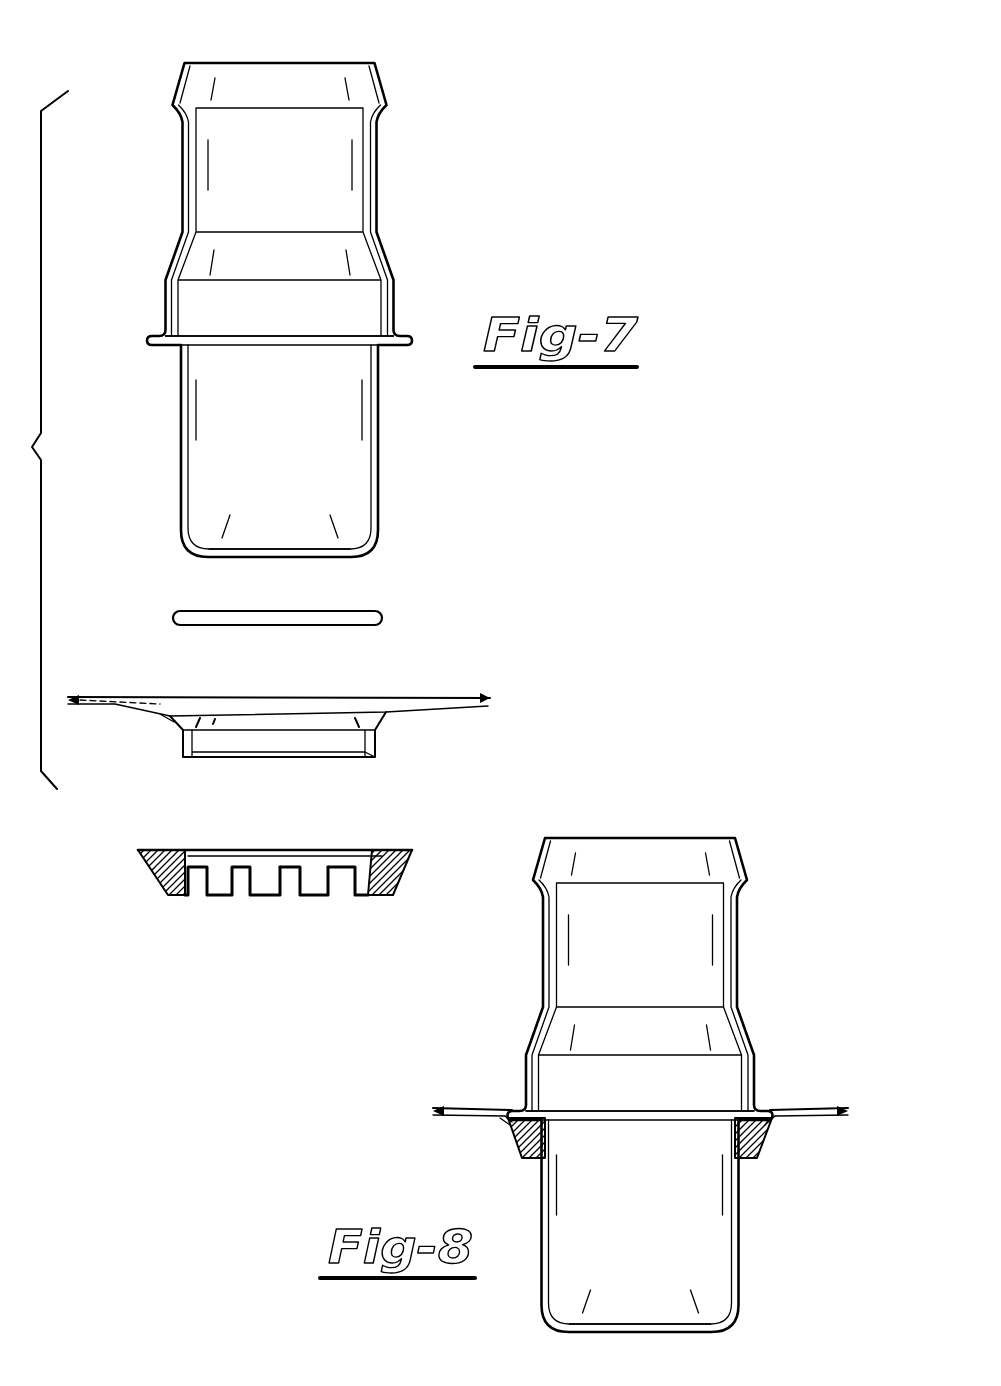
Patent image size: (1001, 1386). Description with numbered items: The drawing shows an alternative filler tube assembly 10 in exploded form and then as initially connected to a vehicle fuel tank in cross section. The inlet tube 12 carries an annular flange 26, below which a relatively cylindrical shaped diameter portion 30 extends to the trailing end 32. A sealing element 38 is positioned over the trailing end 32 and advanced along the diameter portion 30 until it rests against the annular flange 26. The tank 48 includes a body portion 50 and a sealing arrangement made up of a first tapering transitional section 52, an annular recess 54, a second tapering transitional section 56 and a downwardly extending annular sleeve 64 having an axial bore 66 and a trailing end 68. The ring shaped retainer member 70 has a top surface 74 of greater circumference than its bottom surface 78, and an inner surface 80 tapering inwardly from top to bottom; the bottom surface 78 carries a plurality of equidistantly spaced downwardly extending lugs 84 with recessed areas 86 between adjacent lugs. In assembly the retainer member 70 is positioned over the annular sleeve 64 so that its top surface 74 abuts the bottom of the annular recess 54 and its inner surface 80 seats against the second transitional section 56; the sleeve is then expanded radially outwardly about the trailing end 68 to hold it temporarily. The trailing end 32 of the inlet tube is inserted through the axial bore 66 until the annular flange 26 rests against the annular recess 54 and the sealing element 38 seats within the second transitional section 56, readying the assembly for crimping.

In FIG. 7, the filler tube assembly 10 is at (34, 440).
In FIG. 7, the inlet tube 12 is at (418, 92).
In FIG. 8, the inlet tube 12 is at (772, 853).
In FIG. 7, the annular flange 26 is at (389, 346).
In FIG. 8, the annular flange 26 is at (512, 1107).
In FIG. 7, the diameter portion 30 is at (378, 456).
In FIG. 8, the diameter portion 30 is at (740, 1258).
In FIG. 7, the trailing end 32 is at (330, 558).
In FIG. 7, the sealing element 38 is at (375, 645).
In FIG. 7, the tank 48 is at (316, 721).
In FIG. 7, the body portion 50 is at (478, 712).
In FIG. 8, the body portion 50 is at (822, 1107).
In FIG. 7, the first tapering transitional section 52 is at (395, 708).
In FIG. 8, the first tapering transitional section 52 is at (787, 1121).
In FIG. 7, the annular recess 54 is at (383, 713).
In FIG. 8, the annular recess 54 is at (505, 1134).
In FIG. 7, the second tapering transitional section 56 is at (372, 719).
In FIG. 8, the second tapering transitional section 56 is at (513, 1148).
In FIG. 7, the annular sleeve 64 is at (380, 746).
In FIG. 8, the annular sleeve 64 is at (765, 1154).
In FIG. 7, the axial bore 66 is at (250, 741).
In FIG. 8, the trailing end 68 is at (540, 1160).
In FIG. 7, the retainer member 70 is at (289, 878).
In FIG. 7, the top surface 74 is at (152, 850).
In FIG. 7, the bottom surface 78 is at (357, 876).
In FIG. 7, the inner surface 80 is at (183, 857).
In FIG. 7, the lugs 84 is at (268, 886).
In FIG. 7, the recessed areas 86 is at (298, 884).